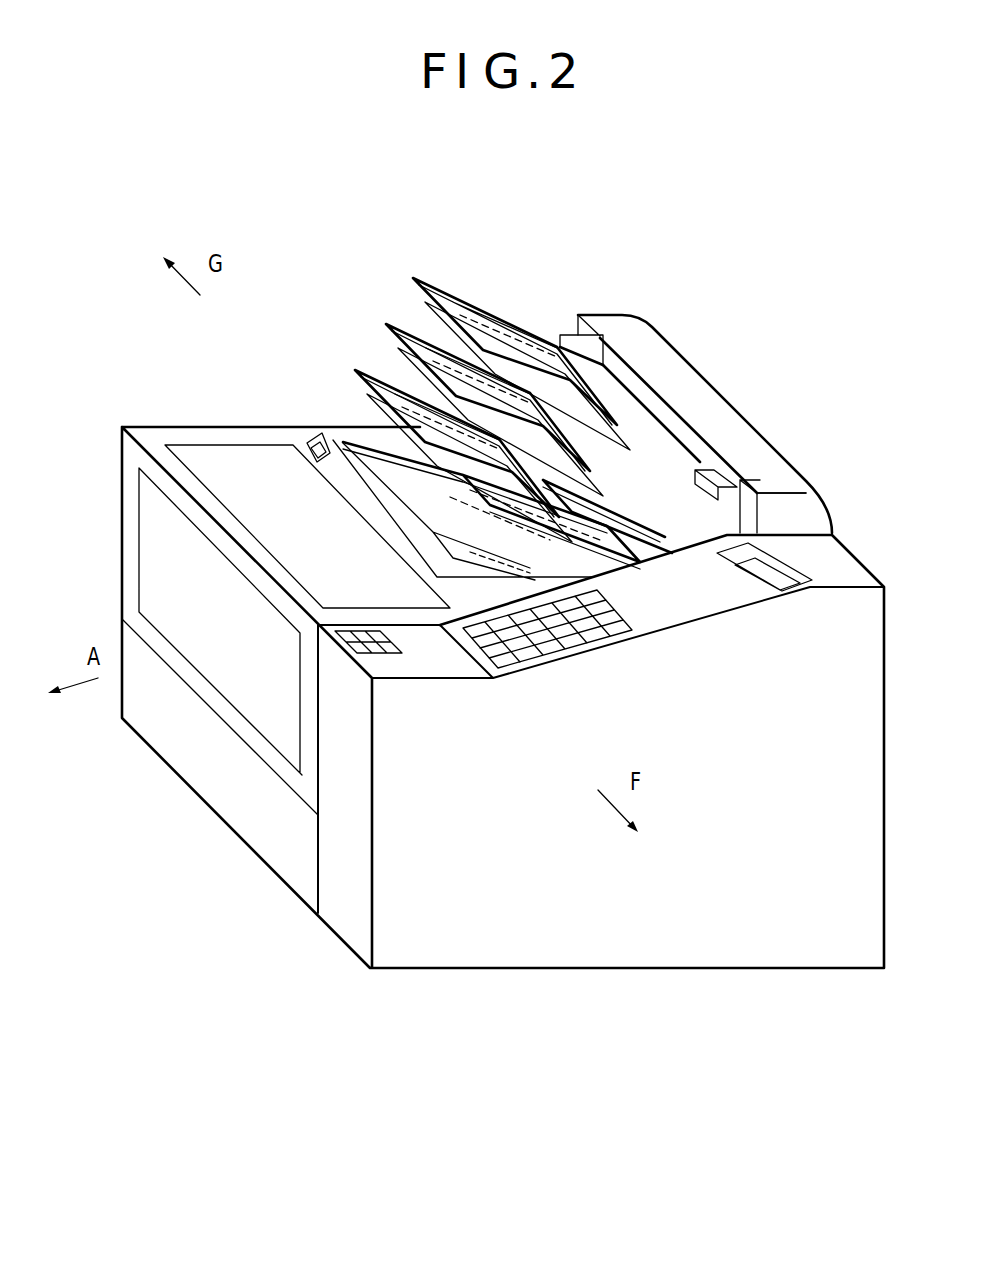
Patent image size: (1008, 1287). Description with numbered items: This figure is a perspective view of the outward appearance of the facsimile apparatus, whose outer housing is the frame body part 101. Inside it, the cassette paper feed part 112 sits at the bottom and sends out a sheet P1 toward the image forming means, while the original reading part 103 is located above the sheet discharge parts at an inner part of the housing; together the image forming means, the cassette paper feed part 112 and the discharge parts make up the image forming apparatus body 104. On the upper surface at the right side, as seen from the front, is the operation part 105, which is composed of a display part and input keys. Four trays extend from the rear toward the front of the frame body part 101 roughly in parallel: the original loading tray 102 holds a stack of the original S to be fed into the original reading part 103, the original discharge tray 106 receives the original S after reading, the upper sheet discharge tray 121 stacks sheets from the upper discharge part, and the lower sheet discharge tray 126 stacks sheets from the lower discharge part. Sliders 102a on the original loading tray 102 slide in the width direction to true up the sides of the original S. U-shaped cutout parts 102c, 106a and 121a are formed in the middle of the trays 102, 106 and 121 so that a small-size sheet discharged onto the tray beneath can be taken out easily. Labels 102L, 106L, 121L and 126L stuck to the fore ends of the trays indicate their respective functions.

The frame body part 101 is at (118, 515).
The original loading tray 102 is at (452, 285).
The label 102L is at (423, 275).
The sliders 102a is at (627, 317).
The U-shaped cutout part 102c is at (637, 360).
The original reading part 103 is at (717, 410).
The image forming apparatus body 104 is at (300, 455).
The operation part 105 is at (713, 578).
The original discharge tray 106 is at (386, 326).
The label 106L is at (398, 347).
The U-shaped cutout part 106a is at (593, 393).
The cassette paper feed part 112 is at (220, 797).
The upper sheet discharge tray 121 is at (355, 370).
The label 121L is at (367, 395).
The U-shaped cutout part 121a is at (568, 482).
The lower sheet discharge tray 126 is at (340, 442).
The label 126L is at (313, 460).
The original S is at (426, 348).
The sheet P1 is at (402, 407).